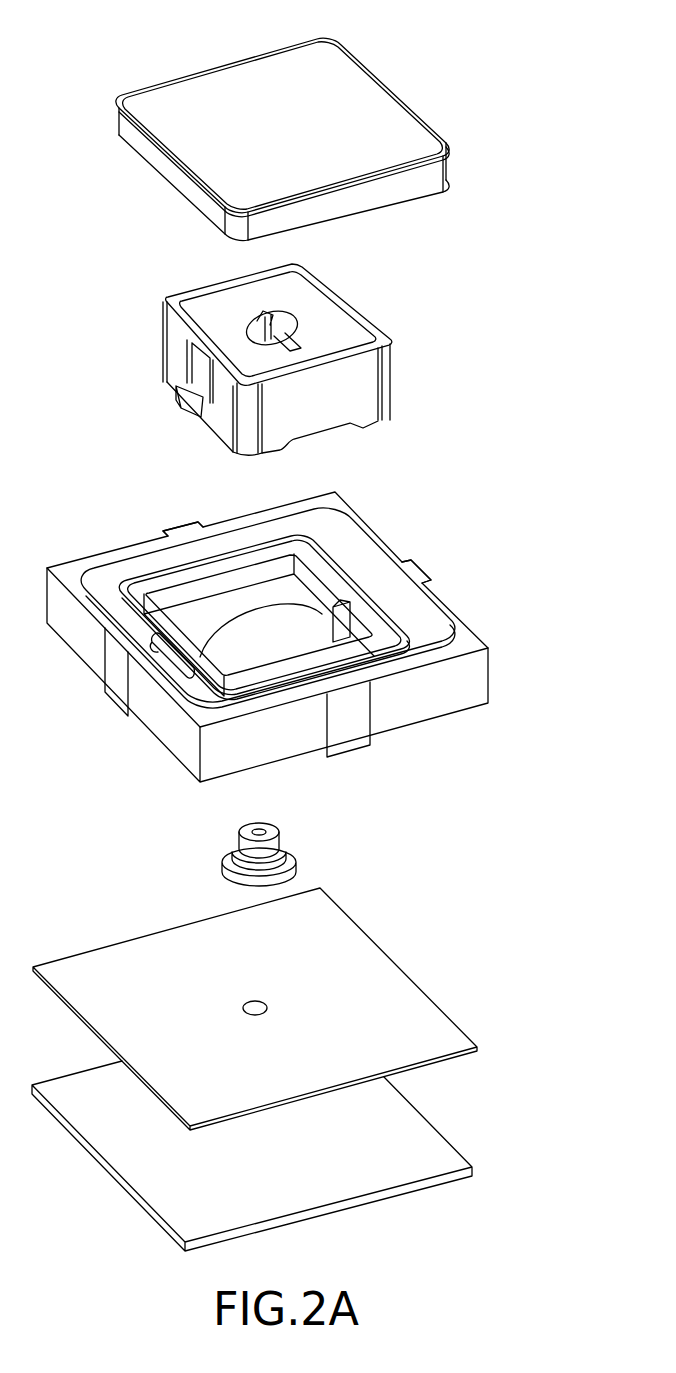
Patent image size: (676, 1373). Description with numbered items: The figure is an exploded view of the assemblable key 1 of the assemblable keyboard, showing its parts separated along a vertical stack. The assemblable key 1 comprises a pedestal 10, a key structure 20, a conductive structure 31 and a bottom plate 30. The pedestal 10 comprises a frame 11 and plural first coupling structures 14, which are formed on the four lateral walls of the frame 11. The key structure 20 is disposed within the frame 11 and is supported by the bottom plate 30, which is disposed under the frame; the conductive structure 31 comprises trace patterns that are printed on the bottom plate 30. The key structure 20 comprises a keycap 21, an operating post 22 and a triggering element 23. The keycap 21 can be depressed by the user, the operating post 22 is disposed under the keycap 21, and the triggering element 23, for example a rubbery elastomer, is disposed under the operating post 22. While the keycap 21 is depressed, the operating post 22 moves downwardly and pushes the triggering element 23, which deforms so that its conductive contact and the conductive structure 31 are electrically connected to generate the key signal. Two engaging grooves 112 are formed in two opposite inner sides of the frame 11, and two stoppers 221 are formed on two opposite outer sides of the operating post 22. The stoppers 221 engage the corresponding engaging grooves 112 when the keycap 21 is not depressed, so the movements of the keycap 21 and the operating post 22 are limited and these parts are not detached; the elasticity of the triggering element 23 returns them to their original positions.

The assemblable key 1 is at (86, 43).
The pedestal 10 is at (476, 616).
The frame 11 is at (115, 605).
The engaging groove 112 is at (346, 630).
The first coupling structure 14 is at (183, 523).
The key structure 20 is at (60, 268).
The keycap 21 is at (378, 113).
The operating post 22 is at (328, 317).
The stopper 221 is at (176, 394).
The triggering element 23 is at (236, 843).
The bottom plate 30 is at (92, 1083).
The conductive structure 31 is at (130, 964).